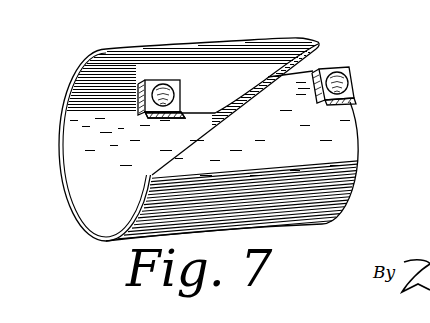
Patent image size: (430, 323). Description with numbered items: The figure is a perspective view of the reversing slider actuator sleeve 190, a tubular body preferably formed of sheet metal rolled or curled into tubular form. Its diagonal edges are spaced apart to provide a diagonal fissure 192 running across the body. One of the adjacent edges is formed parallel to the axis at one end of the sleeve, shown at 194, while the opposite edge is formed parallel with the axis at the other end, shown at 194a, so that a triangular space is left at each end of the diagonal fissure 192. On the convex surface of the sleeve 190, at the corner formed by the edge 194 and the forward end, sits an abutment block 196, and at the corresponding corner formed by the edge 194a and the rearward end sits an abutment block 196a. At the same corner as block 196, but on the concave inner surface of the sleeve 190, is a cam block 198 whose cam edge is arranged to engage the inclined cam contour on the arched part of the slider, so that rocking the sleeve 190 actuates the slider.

The slider actuator sleeve 190 is at (148, 62).
The diagonal fissure 192 is at (240, 102).
The edge 194 is at (202, 111).
The abutment block 196 is at (146, 100).
The cam block 198 is at (143, 115).
The edge 194a is at (303, 70).
The abutment block 196a is at (354, 76).